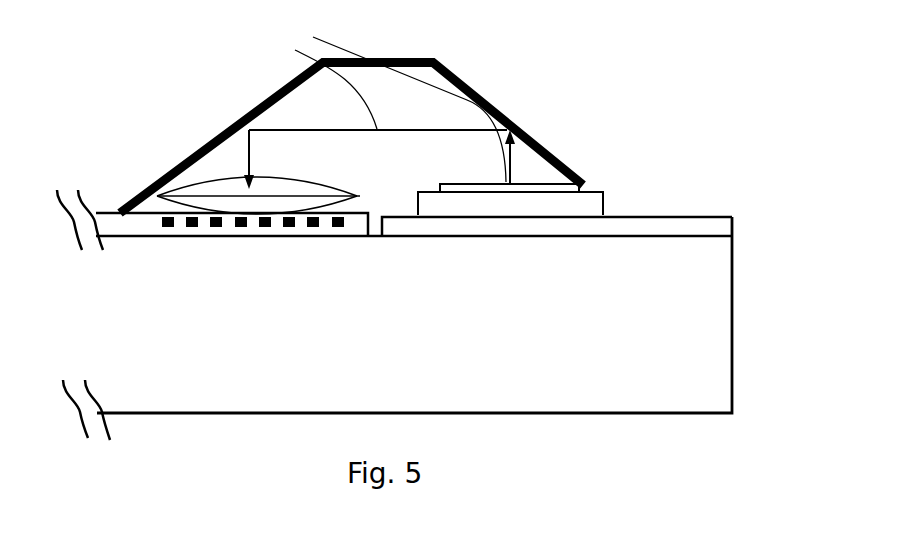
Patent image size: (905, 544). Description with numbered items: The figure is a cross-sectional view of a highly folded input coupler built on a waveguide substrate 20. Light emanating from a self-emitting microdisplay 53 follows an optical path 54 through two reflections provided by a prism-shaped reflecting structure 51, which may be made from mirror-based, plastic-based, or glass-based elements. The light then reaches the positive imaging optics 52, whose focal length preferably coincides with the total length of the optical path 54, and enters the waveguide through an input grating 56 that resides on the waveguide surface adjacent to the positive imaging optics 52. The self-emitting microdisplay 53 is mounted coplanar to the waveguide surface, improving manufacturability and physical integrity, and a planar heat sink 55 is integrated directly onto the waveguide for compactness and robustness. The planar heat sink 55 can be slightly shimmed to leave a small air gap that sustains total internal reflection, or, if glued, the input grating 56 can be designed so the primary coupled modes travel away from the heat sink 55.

The waveguide substrate 20 is at (665, 290).
The prism-shaped reflecting structure 51 is at (463, 83).
The positive imaging optics 52 is at (230, 182).
The self-emitting microdisplay 53 is at (547, 183).
The optical path 54 is at (250, 183).
The planar heat sink 55 is at (668, 223).
The input grating 56 is at (268, 229).